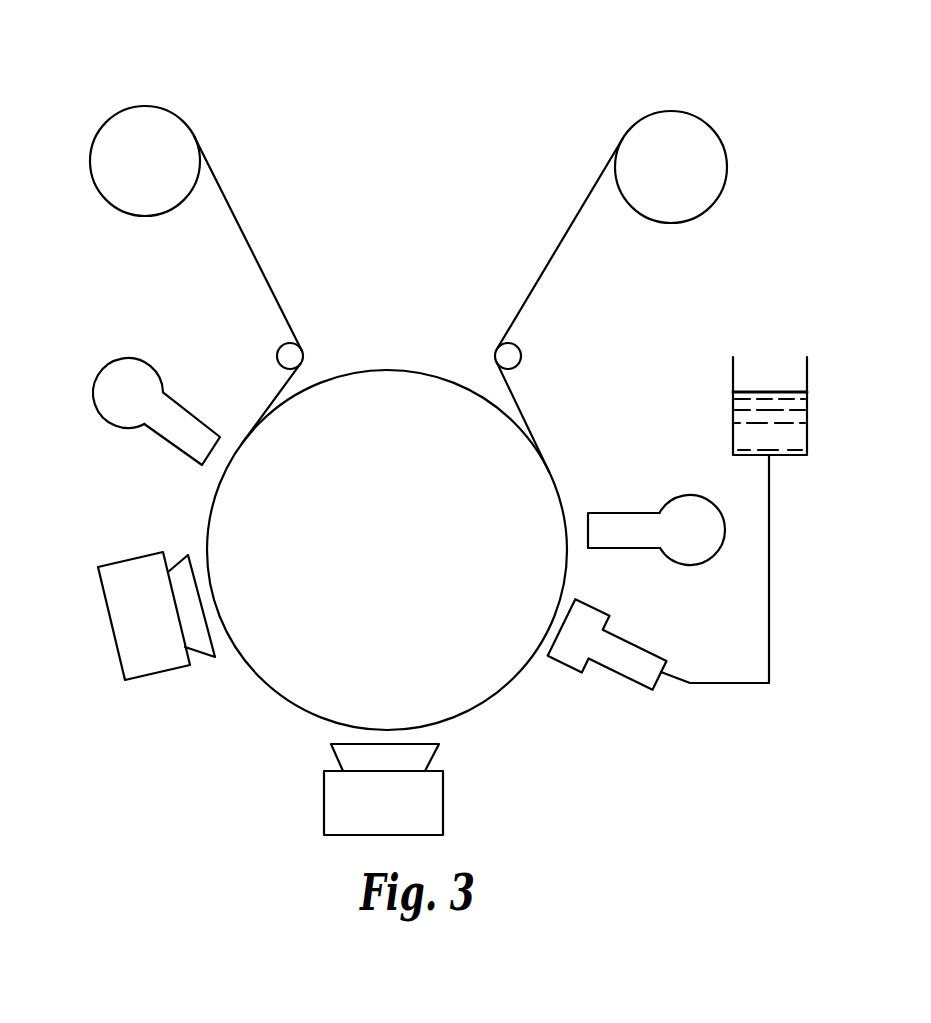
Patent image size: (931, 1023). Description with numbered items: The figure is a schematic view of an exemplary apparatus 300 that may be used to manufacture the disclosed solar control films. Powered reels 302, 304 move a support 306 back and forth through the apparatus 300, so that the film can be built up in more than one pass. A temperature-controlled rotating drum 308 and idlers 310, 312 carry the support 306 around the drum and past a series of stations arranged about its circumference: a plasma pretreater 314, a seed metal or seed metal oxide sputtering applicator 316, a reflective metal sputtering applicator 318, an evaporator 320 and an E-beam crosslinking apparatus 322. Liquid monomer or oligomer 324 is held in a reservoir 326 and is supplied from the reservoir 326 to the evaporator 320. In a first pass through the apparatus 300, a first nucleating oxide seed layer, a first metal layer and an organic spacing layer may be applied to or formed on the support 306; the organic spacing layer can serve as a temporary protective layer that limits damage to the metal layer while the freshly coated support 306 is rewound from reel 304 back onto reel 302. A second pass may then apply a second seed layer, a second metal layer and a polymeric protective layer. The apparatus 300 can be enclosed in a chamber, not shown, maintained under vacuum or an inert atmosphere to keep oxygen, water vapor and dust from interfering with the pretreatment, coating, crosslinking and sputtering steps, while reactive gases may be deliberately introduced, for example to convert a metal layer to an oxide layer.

The apparatus 300 is at (455, 97).
The powered reel 302 is at (108, 180).
The powered reel 304 is at (700, 193).
The support 306 is at (257, 257).
The temperature-controlled rotating drum 308 is at (282, 672).
The idler 310 is at (277, 357).
The idler 312 is at (521, 355).
The plasma pretreater 314 is at (117, 403).
The seed metal or seed metal oxide sputtering applicator 316 is at (128, 623).
The reflective metal sputtering applicator 318 is at (412, 800).
The evaporator 320 is at (618, 660).
The E-beam crosslinking apparatus 322 is at (690, 547).
The liquid monomer or oligomer 324 is at (792, 433).
The reservoir 326 is at (733, 424).